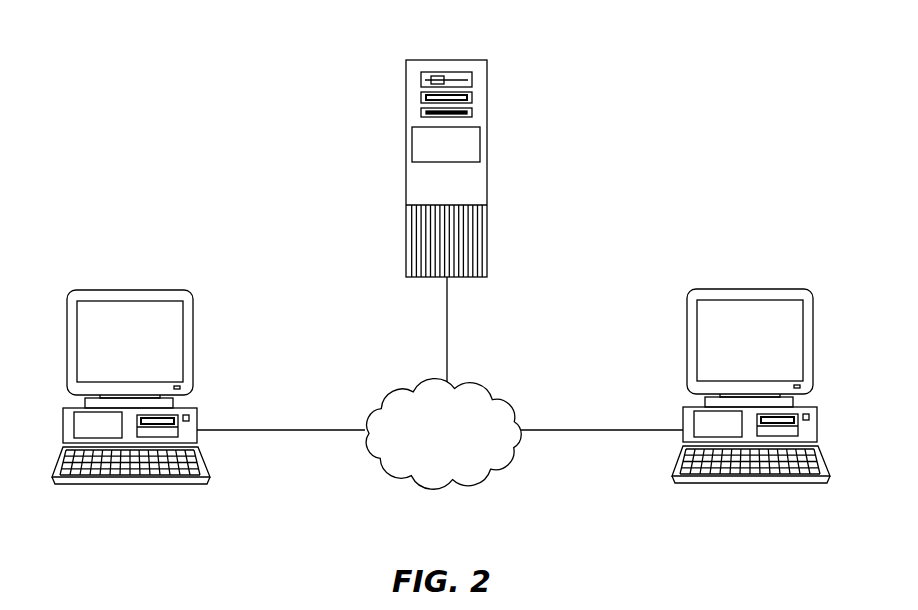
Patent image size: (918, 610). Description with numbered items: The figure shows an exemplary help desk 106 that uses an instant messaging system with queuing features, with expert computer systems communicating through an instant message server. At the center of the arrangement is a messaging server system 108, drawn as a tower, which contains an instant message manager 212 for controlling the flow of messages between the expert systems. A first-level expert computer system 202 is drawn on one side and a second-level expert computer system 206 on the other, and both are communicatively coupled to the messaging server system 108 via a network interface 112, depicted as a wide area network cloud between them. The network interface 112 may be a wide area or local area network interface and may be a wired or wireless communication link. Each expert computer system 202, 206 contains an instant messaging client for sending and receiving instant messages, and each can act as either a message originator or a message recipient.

The help desk 106 is at (535, 555).
The messaging server system 108 is at (449, 168).
The network interface 112 is at (490, 384).
The first-level expert computer system 202 is at (131, 387).
The second-level expert computer system 206 is at (749, 386).
The instant message manager 212 is at (412, 143).